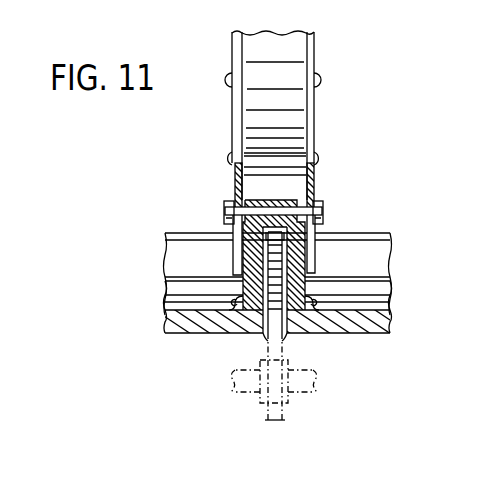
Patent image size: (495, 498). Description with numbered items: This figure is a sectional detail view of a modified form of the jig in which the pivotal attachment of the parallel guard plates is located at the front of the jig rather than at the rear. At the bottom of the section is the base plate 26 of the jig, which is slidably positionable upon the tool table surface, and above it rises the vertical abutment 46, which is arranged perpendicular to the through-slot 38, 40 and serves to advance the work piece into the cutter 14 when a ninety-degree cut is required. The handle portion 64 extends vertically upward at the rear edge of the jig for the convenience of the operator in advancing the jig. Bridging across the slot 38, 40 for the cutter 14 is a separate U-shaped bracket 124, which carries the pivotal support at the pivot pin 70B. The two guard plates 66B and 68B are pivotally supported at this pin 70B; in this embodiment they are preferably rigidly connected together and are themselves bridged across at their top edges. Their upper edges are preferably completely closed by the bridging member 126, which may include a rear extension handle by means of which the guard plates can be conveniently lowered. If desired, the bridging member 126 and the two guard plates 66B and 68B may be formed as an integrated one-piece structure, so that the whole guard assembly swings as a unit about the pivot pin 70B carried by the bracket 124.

The bridging member 126 is at (290, 55).
The guard plate 66B is at (238, 122).
The guard plate 68B is at (313, 123).
The pivot pin 70B is at (225, 210).
The U-shaped bracket 124 is at (293, 265).
The handle portion 64 is at (375, 257).
The vertical abutment 46 is at (382, 288).
The base plate 26 is at (380, 323).
The through-slot 40 is at (266, 335).
The through-slot 38 is at (283, 333).
The cutter 14 is at (280, 408).